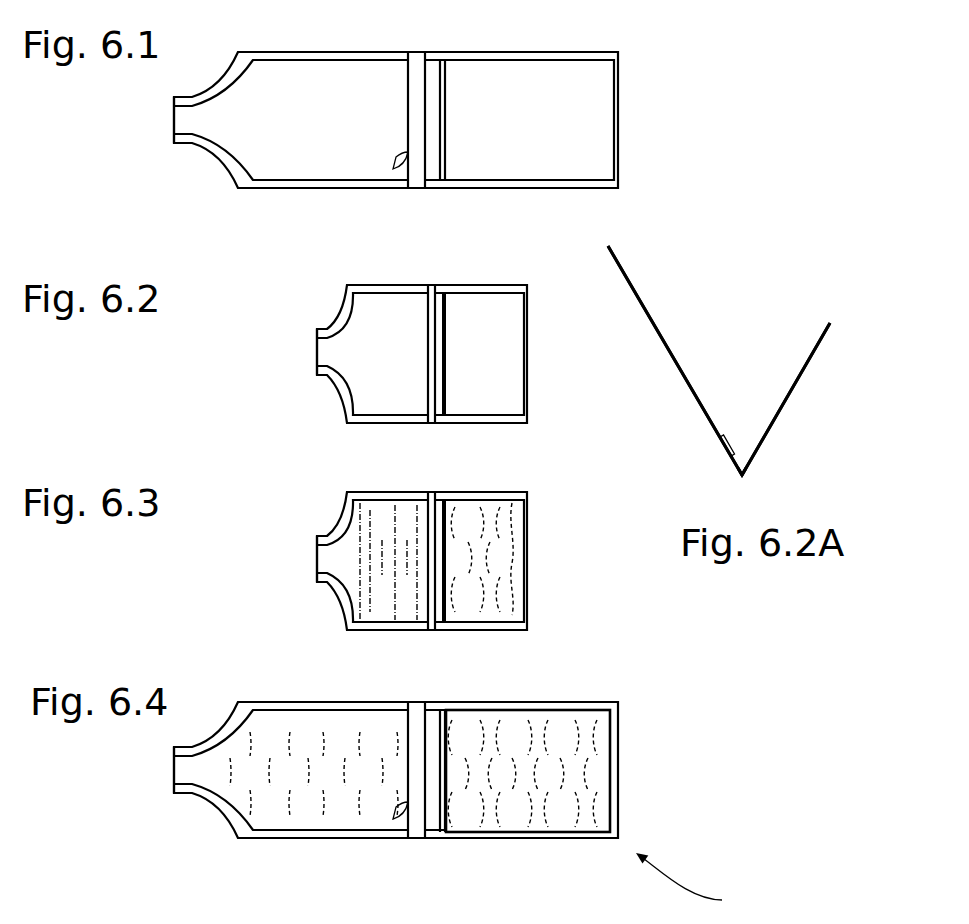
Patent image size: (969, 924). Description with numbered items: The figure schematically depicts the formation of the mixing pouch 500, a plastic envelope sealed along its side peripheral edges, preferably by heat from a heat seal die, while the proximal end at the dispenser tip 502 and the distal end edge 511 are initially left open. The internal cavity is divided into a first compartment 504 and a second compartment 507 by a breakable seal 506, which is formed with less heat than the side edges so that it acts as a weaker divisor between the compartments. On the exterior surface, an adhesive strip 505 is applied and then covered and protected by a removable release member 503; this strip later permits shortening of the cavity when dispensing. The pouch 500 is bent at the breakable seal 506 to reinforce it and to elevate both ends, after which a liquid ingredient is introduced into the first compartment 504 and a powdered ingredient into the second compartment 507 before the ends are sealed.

In FIG. 6.4, the mixing pouch 500 is at (706, 884).
In FIG. 6.1, the dispenser tip 502 is at (203, 138).
In FIG. 6.2, the dispenser tip 502 is at (326, 376).
In FIG. 6.2A, the dispenser tip 502 is at (608, 246).
In FIG. 6.4, the dispenser tip 502 is at (204, 798).
In FIG. 6.1, the removable release member 503 is at (403, 152).
In FIG. 6.2A, the removable release member 503 is at (733, 438).
In FIG. 6.4, the removable release member 503 is at (400, 810).
In FIG. 6.1, the first compartment 504 is at (320, 77).
In FIG. 6.3, the first compartment 504 is at (377, 590).
In FIG. 6.2A, the first compartment 504 is at (648, 308).
In FIG. 6.4, the first compartment 504 is at (340, 732).
In FIG. 6.1, the adhesive strip 505 is at (417, 175).
In FIG. 6.4, the adhesive strip 505 is at (417, 828).
In FIG. 6.1, the breakable seal 506 is at (448, 125).
In FIG. 6.2, the breakable seal 506 is at (447, 333).
In FIG. 6.3, the breakable seal 506 is at (447, 557).
In FIG. 6.2A, the breakable seal 506 is at (740, 478).
In FIG. 6.4, the breakable seal 506 is at (443, 772).
In FIG. 6.1, the second compartment 507 is at (560, 75).
In FIG. 6.3, the second compartment 507 is at (517, 592).
In FIG. 6.2A, the second compartment 507 is at (780, 417).
In FIG. 6.4, the second compartment 507 is at (542, 722).
In FIG. 6.1, the distal end edge 511 is at (622, 113).
In FIG. 6.2, the distal end edge 511 is at (530, 365).
In FIG. 6.3, the distal end edge 511 is at (422, 561).
In FIG. 6.2A, the distal end edge 511 is at (719, 323).
In FIG. 6.4, the distal end edge 511 is at (612, 770).